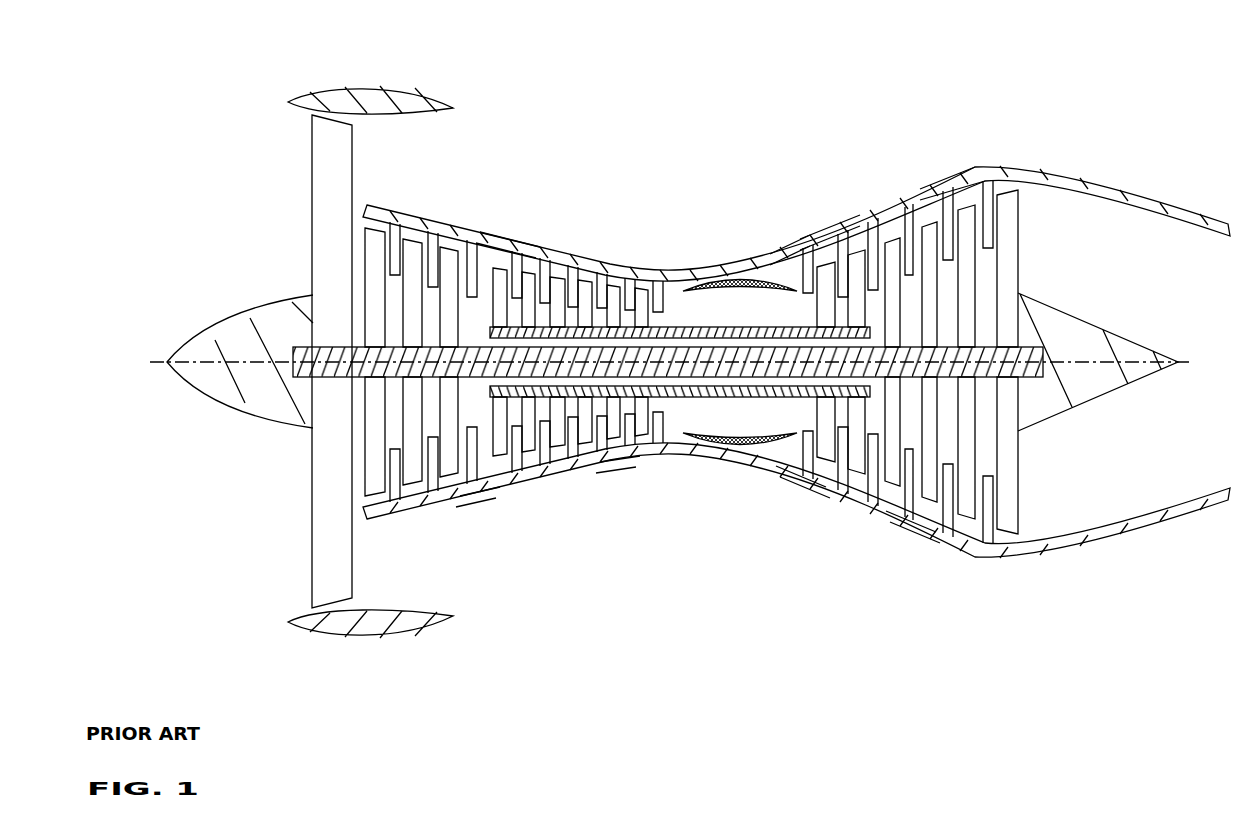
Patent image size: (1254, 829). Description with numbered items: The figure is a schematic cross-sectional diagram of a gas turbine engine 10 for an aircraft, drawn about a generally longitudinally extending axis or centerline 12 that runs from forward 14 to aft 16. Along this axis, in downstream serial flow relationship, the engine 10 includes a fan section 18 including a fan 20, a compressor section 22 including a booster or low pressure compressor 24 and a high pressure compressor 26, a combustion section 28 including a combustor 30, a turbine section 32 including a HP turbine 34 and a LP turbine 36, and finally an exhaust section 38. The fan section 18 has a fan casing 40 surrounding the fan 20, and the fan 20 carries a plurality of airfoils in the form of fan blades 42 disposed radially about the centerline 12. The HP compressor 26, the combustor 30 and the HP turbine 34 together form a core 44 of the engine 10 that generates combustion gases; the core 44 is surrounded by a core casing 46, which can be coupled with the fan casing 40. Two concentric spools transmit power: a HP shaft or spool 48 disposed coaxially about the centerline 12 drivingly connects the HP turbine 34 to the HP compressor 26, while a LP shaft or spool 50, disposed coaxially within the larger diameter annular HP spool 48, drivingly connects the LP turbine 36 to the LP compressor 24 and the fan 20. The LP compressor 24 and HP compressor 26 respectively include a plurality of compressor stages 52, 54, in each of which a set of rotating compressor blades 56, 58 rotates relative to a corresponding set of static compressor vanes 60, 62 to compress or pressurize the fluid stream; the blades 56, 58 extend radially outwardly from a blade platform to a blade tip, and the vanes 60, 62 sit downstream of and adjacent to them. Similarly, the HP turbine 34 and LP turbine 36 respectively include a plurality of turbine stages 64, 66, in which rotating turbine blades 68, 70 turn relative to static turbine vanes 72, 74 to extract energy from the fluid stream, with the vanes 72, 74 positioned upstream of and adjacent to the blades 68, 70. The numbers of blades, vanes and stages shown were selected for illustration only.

The gas turbine engine 10 is at (207, 28).
The centerline 12 is at (223, 362).
The forward direction 14 is at (168, 362).
The aft direction 16 is at (1187, 362).
The fan section 18 is at (357, 672).
The fan 20 is at (303, 172).
The compressor section 22 is at (360, 672).
The low pressure compressor 24 is at (484, 498).
The high pressure compressor 26 is at (622, 472).
The combustion section 28 is at (683, 672).
The combustor 30 is at (788, 270).
The turbine section 32 is at (1010, 672).
The HP turbine 34 is at (805, 490).
The LP turbine 36 is at (918, 528).
The exhaust section 38 is at (1235, 672).
The fan casing 40 is at (372, 86).
The fan blades 42 is at (322, 555).
The core 44 is at (870, 553).
The core casing 46 is at (720, 262).
The HP shaft or spool 48 is at (672, 322).
The LP shaft or spool 50 is at (477, 347).
The compressor stages 52 is at (362, 198).
The compressor stages 54 is at (503, 228).
The compressor blades 56 is at (378, 233).
The compressor blades 58 is at (503, 275).
The compressor vanes 60 is at (397, 240).
The compressor vanes 62 is at (520, 286).
The turbine stages 64 is at (828, 226).
The turbine stages 66 is at (941, 176).
The turbine blades 68 is at (843, 265).
The turbine blades 70 is at (968, 225).
The static turbine vanes 72 is at (850, 275).
The static turbine vanes 74 is at (950, 222).